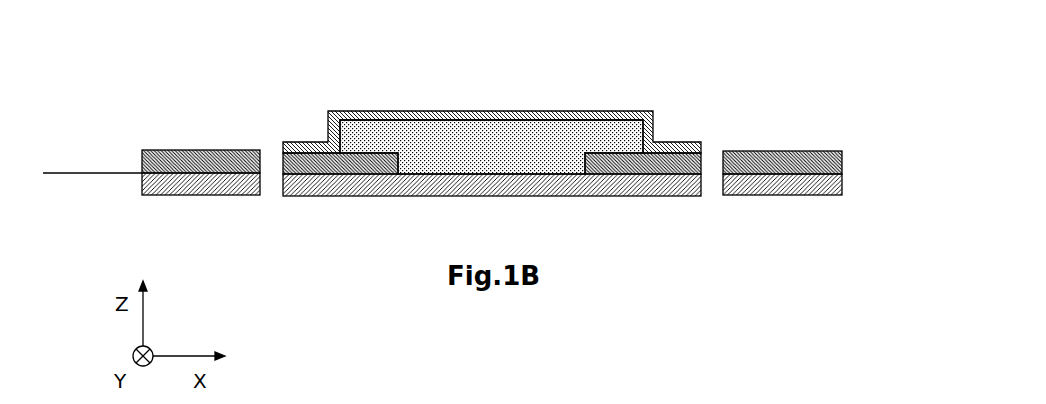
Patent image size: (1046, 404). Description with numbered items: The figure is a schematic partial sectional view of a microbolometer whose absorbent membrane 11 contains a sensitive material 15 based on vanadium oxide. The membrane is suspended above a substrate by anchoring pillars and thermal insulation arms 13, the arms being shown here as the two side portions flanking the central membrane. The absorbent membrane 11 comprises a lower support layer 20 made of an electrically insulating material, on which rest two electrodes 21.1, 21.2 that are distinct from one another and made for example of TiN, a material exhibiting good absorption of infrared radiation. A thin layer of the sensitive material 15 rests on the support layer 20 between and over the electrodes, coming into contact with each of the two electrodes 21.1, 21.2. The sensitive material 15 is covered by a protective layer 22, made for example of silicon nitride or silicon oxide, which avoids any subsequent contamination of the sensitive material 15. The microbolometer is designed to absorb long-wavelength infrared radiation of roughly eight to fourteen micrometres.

The absorbent membrane 11 is at (492, 111).
The thermal insulation arms 13 is at (502, 117).
The sensitive material 15 is at (477, 147).
The lower support layer 20 is at (842, 183).
The first electrode 21.1 is at (142, 163).
The second electrode 21.2 is at (842, 163).
The protective layer 22 is at (558, 110).